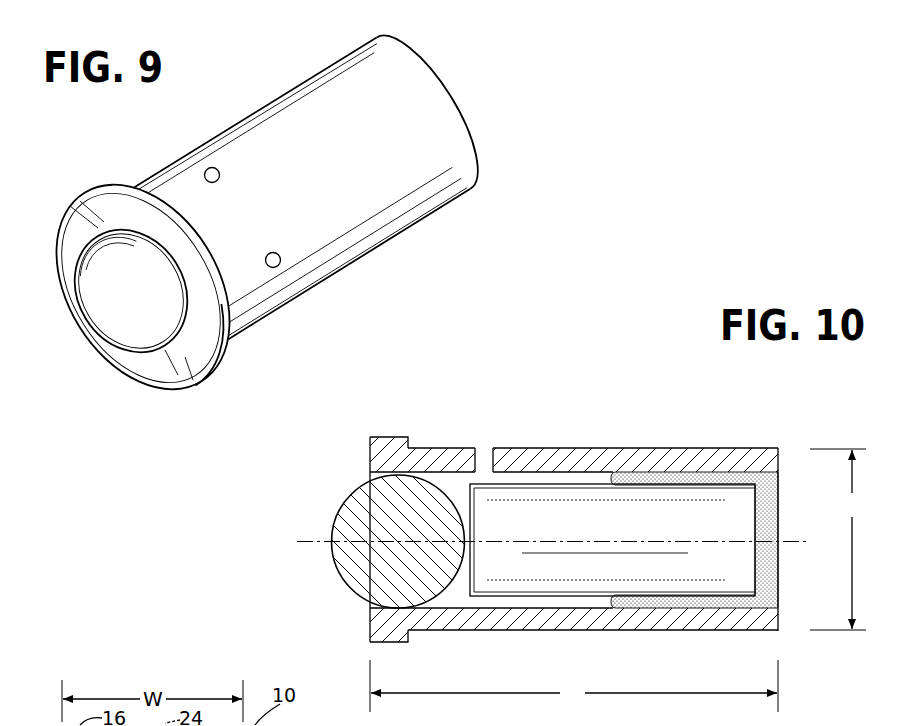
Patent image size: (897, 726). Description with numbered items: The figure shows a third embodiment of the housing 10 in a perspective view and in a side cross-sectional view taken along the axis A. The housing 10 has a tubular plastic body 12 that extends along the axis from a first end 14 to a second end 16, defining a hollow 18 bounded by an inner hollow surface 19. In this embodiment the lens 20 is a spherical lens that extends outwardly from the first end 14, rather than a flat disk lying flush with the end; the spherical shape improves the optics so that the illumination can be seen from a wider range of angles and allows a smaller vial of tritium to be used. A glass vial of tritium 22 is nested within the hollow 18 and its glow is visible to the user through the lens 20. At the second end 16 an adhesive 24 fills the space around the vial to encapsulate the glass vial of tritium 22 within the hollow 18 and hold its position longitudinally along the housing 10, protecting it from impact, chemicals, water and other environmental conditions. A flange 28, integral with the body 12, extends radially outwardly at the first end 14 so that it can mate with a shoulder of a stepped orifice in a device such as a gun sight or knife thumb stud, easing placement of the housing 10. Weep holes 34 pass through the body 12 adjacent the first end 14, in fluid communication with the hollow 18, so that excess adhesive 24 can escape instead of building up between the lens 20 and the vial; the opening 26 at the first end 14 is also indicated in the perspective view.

In FIG. 9, the housing 10 is at (233, 81).
In FIG. 10, the housing 10 is at (636, 417).
In FIG. 9, the body 12 is at (440, 137).
In FIG. 10, the body 12 is at (647, 632).
In FIG. 9, the first end 14 is at (70, 277).
In FIG. 10, the first end 14 is at (370, 460).
In FIG. 9, the second end 16 is at (408, 40).
In FIG. 10, the second end 16 is at (778, 462).
In FIG. 10, the hollow 18 is at (461, 601).
In FIG. 10, the inner hollow surface 19 is at (565, 605).
In FIG. 9, the lens 20 is at (97, 265).
In FIG. 10, the lens 20 is at (342, 507).
In FIG. 10, the glass vial of tritium 22 is at (600, 512).
In FIG. 10, the adhesive 24 is at (772, 587).
In FIG. 9, the opening 26 is at (156, 340).
In FIG. 9, the flange 28 is at (217, 368).
In FIG. 10, the flange 28 is at (385, 437).
In FIG. 9, the weep hole 34 is at (210, 167).
In FIG. 10, the weep hole 34 is at (474, 467).